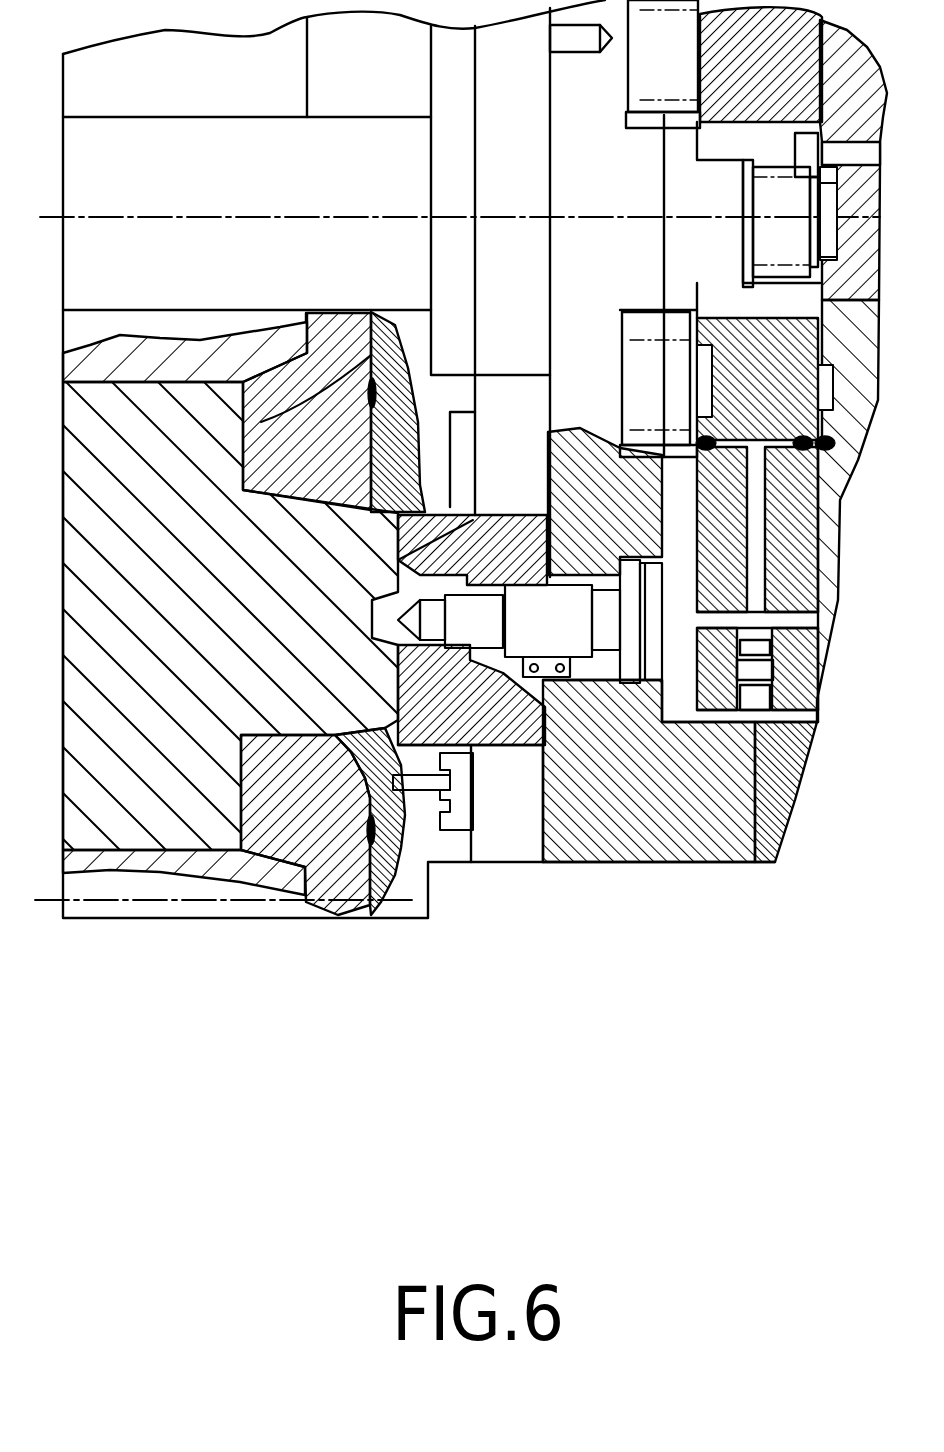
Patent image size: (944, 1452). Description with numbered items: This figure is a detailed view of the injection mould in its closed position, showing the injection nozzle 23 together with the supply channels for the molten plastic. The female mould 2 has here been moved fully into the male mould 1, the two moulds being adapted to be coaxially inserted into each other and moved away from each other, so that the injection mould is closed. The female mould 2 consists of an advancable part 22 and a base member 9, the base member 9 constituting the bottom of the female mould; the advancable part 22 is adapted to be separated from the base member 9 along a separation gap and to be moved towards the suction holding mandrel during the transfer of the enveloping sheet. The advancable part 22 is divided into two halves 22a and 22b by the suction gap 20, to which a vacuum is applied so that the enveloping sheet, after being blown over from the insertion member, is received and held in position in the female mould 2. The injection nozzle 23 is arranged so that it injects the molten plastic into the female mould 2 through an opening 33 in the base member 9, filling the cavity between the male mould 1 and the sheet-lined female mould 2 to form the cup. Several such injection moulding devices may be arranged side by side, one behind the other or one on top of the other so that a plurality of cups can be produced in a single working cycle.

The male mould 1 is at (258, 694).
The female mould 2 is at (524, 777).
The base member 9 is at (622, 871).
The suction gap 20 is at (240, 433).
The advancable part 22 is at (420, 788).
The half of the advancable part 22a is at (472, 550).
The half of the advancable part 22b is at (471, 695).
The injection nozzle 23 is at (372, 725).
The opening 33 is at (380, 612).